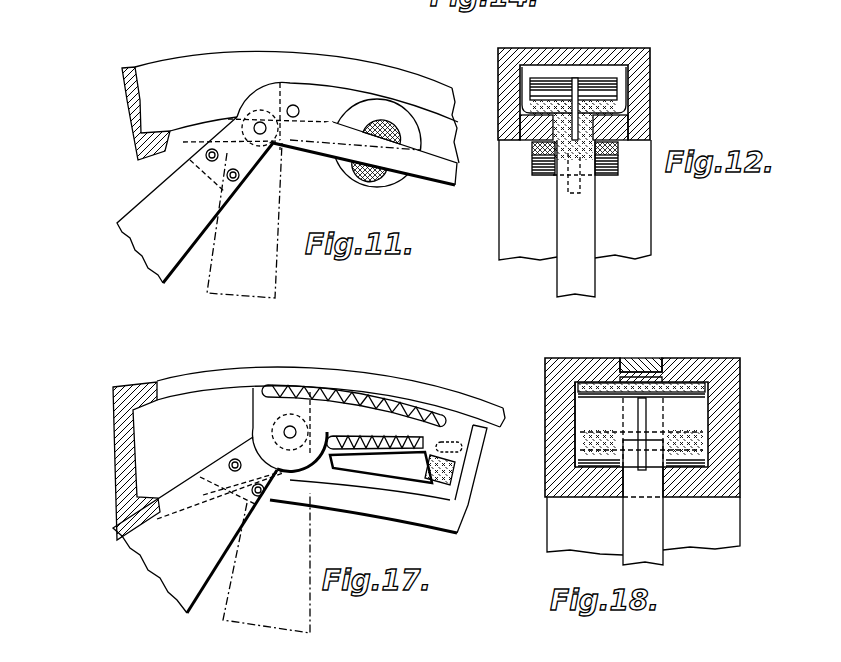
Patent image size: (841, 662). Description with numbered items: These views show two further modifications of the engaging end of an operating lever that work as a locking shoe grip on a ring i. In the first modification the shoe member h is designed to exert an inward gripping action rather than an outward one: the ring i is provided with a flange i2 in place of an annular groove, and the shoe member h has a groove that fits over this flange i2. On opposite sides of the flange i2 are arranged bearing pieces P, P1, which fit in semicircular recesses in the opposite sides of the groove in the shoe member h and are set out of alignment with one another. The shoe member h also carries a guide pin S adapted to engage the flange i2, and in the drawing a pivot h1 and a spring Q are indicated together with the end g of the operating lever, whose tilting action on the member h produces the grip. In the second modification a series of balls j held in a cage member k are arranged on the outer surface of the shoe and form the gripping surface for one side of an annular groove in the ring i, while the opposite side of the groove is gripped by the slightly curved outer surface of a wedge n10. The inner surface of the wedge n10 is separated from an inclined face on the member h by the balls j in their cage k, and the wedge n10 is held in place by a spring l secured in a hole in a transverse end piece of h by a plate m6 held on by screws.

In FIG. 11, the ring i is at (208, 58).
In FIG. 12, the ring i is at (510, 48).
In FIG. 17, the ring i is at (470, 400).
In FIG. 18, the ring i is at (581, 362).
In FIG. 11, the flange i2 is at (168, 142).
In FIG. 12, the flange i2 is at (560, 115).
In FIG. 17, the flange i2 is at (136, 461).
In FIG. 11, the shoe member h is at (333, 97).
In FIG. 12, the shoe member h is at (613, 83).
In FIG. 17, the shoe member h is at (333, 413).
In FIG. 18, the shoe member h is at (700, 410).
In FIG. 11, the pivot pin h1 is at (261, 122).
In FIG. 12, the pivot pin h1 is at (636, 130).
In FIG. 17, the pivot pin h1 is at (284, 432).
In FIG. 11, the guide pin S is at (296, 105).
In FIG. 12, the guide pin S is at (537, 107).
In FIG. 11, the bearing piece P is at (393, 120).
In FIG. 11, the bearing piece P1 is at (360, 166).
In FIG. 12, the bearing piece P1 is at (620, 156).
In FIG. 11, the end of the operating lever g is at (155, 203).
In FIG. 12, the end of the operating lever g is at (585, 278).
In FIG. 17, the end of the operating lever g is at (177, 567).
In FIG. 18, the end of the operating lever g is at (653, 525).
In FIG. 12, the spring Q is at (563, 163).
In FIG. 17, the balls j is at (387, 393).
In FIG. 18, the balls j is at (588, 382).
In FIG. 17, the cage member k is at (427, 407).
In FIG. 18, the cage member k is at (703, 385).
In FIG. 17, the plate m6 is at (478, 440).
In FIG. 18, the plate m6 is at (575, 433).
In FIG. 17, the wedge n10 is at (392, 470).
In FIG. 17, the spring l is at (433, 470).